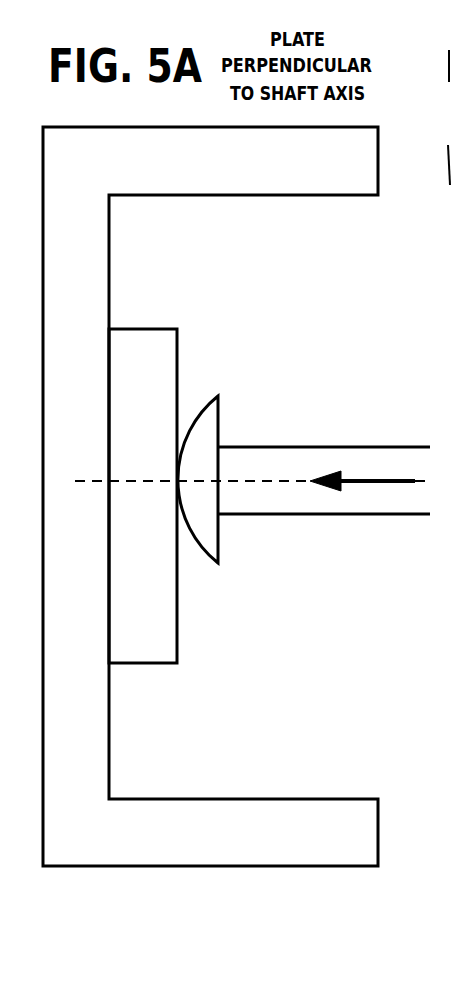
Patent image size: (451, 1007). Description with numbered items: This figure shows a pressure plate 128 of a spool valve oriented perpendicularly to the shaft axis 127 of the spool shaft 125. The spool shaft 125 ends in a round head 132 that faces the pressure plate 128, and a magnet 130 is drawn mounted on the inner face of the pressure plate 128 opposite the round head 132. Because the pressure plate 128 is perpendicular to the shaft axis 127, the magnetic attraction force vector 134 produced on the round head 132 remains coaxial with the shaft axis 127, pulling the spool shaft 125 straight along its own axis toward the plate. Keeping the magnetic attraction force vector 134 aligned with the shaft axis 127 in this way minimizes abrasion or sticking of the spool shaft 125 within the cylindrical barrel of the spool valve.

The spool shaft 125 is at (267, 515).
The shaft axis 127 is at (277, 480).
The pressure plate 128 is at (188, 867).
The magnet 130 is at (143, 647).
The round head 132 is at (203, 403).
The magnetic attraction force vector 134 is at (380, 482).